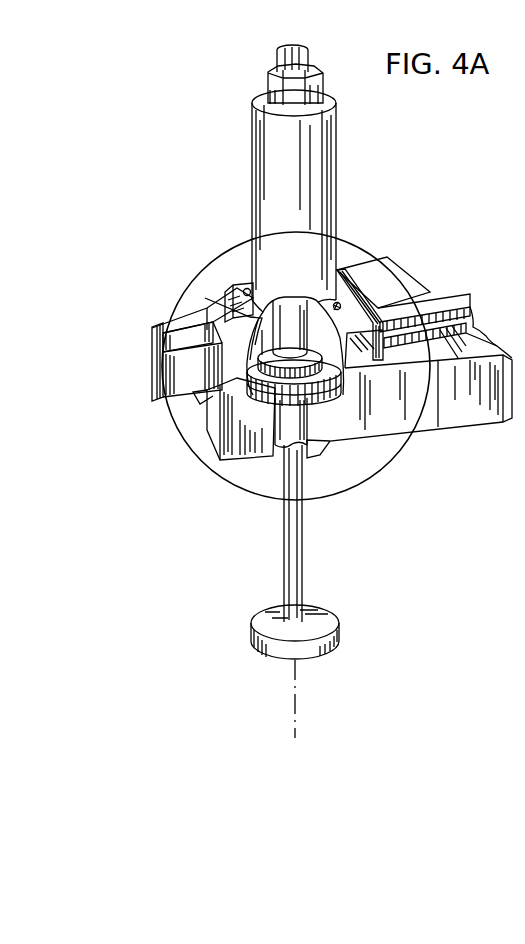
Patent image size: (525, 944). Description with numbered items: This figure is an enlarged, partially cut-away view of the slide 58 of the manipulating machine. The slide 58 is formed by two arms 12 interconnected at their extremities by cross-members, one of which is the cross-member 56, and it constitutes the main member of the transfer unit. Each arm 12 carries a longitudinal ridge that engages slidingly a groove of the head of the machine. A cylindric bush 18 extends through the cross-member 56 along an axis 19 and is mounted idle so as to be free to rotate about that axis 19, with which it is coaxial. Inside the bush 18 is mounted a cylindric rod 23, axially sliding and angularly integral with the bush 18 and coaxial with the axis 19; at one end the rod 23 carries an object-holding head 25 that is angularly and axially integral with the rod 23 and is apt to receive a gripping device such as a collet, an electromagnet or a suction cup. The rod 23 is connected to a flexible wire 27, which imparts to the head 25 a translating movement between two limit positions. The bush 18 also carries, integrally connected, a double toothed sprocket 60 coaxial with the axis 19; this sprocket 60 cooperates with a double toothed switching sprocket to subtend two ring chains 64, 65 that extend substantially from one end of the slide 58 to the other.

The arm 12 is at (400, 274).
The cylindric bush 18 is at (293, 440).
The axis 19 is at (297, 712).
The cylindric rod 23 is at (302, 572).
The object-holding head 25 is at (326, 616).
The flexible wire 27 is at (300, 50).
The cross-member 56 is at (240, 300).
The slide 58 is at (460, 432).
The double toothed sprocket 60 is at (262, 392).
The ring chain 64 is at (336, 384).
The ring chain 65 is at (266, 396).